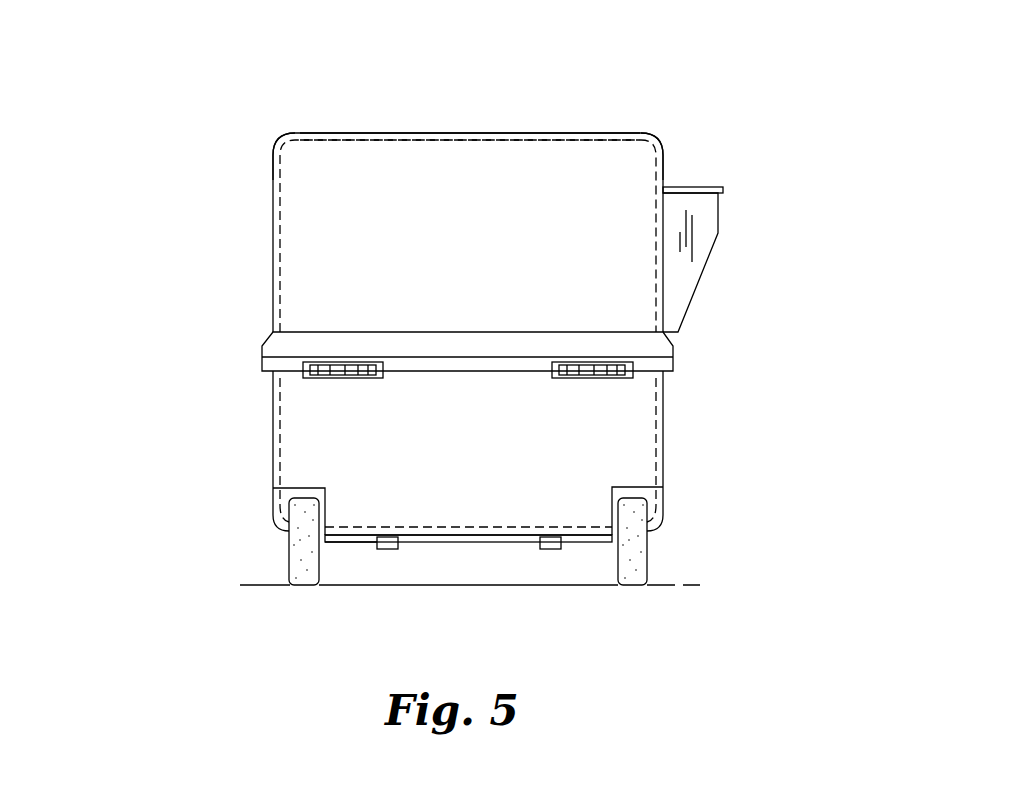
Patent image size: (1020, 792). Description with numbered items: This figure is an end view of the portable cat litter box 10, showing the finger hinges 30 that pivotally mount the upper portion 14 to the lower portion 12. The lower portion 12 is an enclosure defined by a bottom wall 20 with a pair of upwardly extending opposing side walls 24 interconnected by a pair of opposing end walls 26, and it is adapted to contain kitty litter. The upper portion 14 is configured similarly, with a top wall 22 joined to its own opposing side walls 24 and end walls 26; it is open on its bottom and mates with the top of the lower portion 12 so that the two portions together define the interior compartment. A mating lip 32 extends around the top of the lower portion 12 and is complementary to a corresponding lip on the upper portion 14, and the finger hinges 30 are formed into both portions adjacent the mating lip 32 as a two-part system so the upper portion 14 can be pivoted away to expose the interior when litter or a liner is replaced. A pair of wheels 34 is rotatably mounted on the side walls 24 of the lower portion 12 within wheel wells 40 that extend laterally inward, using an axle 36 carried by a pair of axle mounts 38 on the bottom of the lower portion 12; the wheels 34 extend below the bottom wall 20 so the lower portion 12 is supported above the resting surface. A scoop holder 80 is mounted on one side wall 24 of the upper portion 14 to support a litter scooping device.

The cat litter box 10 is at (153, 143).
The lower portion 12 is at (273, 477).
The upper portion 14 is at (540, 133).
The bottom wall 20 is at (482, 542).
The top wall 22 is at (365, 133).
The side walls 24 is at (273, 175).
The end walls 26 is at (490, 255).
The finger hinges 30 is at (322, 380).
The mating lip 32 is at (673, 356).
The wheels 34 is at (290, 575).
The axle 36 is at (347, 545).
The axle mounts 38 is at (387, 549).
The wheel wells 40 is at (277, 520).
The scoop holder 80 is at (705, 265).